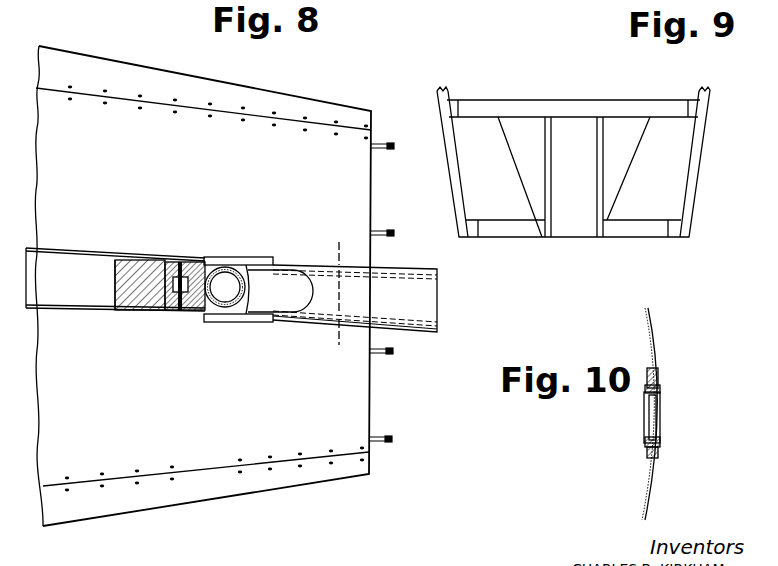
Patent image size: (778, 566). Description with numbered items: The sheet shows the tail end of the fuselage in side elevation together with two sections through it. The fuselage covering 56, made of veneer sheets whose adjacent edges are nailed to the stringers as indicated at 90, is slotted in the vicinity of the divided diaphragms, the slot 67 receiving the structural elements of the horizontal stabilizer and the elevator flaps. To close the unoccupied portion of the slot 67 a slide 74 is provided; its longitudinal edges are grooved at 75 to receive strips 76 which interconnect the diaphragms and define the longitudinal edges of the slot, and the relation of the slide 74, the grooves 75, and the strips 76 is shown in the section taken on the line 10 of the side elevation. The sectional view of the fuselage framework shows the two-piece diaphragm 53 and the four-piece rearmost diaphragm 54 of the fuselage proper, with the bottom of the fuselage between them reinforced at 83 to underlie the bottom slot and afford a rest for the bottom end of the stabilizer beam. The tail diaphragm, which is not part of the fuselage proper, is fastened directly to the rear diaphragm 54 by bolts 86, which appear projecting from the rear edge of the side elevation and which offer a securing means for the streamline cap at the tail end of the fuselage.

In FIG. 8, the section line 10 is at (341, 293).
In FIG. 9, the diaphragm 53 is at (485, 106).
In FIG. 9, the diaphragm 54 is at (515, 225).
In FIG. 8, the covering 56 is at (63, 58).
In FIG. 8, the slot 67 is at (262, 257).
In FIG. 10, the slot 67 is at (657, 447).
In FIG. 8, the slide 74 is at (424, 299).
In FIG. 10, the slide 74 is at (662, 409).
In FIG. 8, the groove 75 is at (413, 330).
In FIG. 10, the groove 75 is at (662, 381).
In FIG. 8, the strip 76 is at (223, 258).
In FIG. 10, the strip 76 is at (657, 361).
In FIG. 9, the reinforcement 83 is at (523, 157).
In FIG. 8, the bolt 86 is at (388, 143).
In FIG. 8, the nail 90 is at (276, 114).